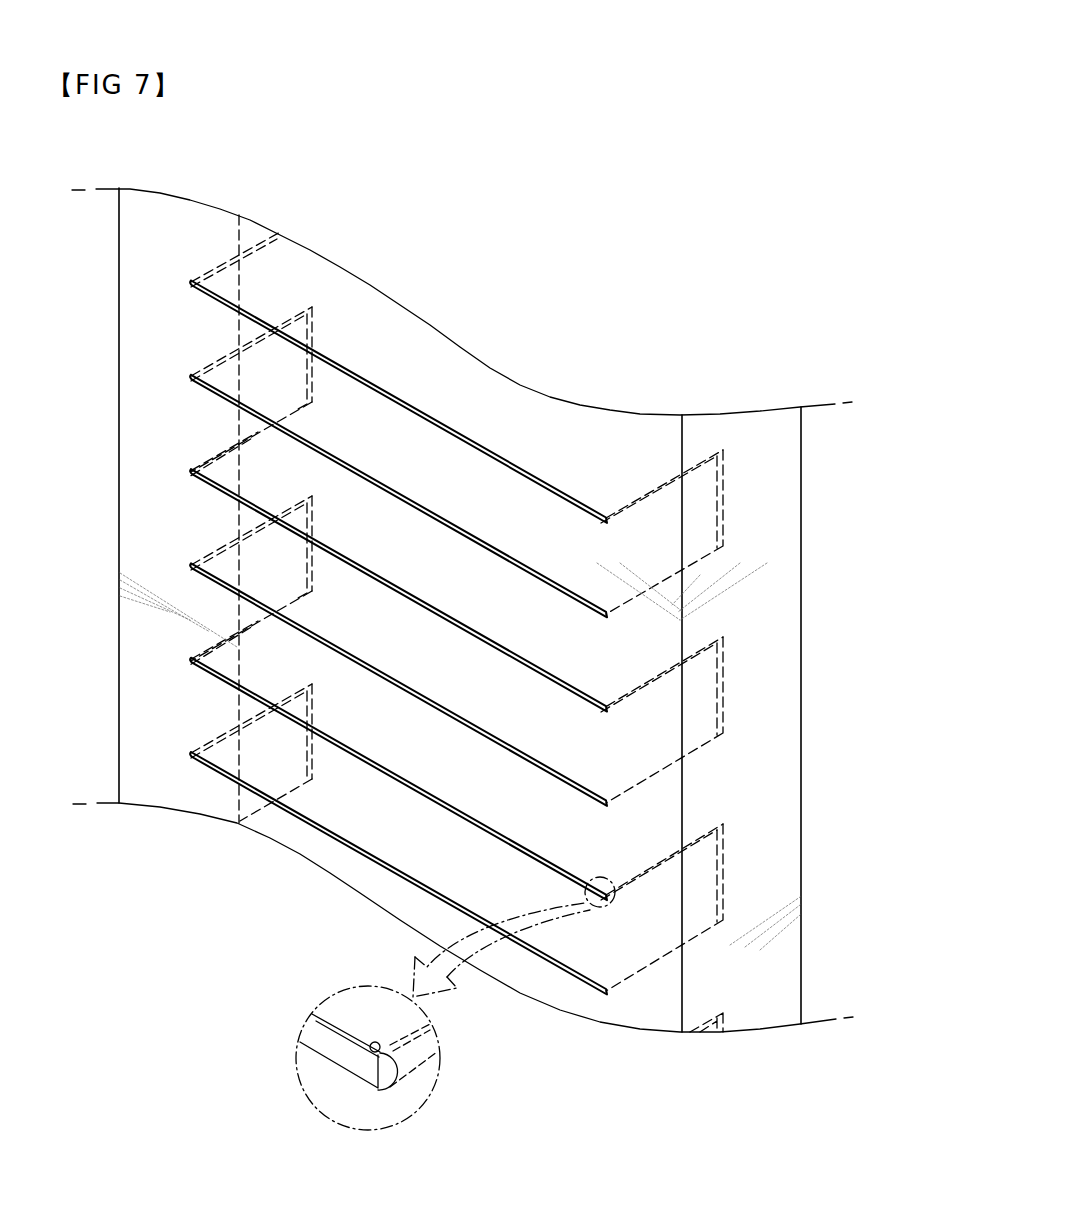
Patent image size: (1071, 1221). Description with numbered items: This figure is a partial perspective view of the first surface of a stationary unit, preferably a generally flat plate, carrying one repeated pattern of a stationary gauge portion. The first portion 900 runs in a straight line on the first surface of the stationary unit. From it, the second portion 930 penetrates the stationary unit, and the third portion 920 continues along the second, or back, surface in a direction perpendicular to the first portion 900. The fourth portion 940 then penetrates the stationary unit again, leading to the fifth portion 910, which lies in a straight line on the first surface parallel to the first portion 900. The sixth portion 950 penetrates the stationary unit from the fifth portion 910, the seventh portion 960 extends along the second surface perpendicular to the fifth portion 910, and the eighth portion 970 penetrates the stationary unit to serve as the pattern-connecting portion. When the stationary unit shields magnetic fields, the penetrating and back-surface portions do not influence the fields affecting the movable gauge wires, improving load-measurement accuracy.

The first portion 900 is at (422, 416).
The fifth portion 910 is at (495, 548).
The third portion 920 is at (723, 475).
The second portion 930 is at (655, 482).
The fourth portion 940 is at (663, 582).
The sixth portion 950 is at (216, 361).
The seventh portion 960 is at (313, 327).
The eighth portion 970 is at (217, 457).